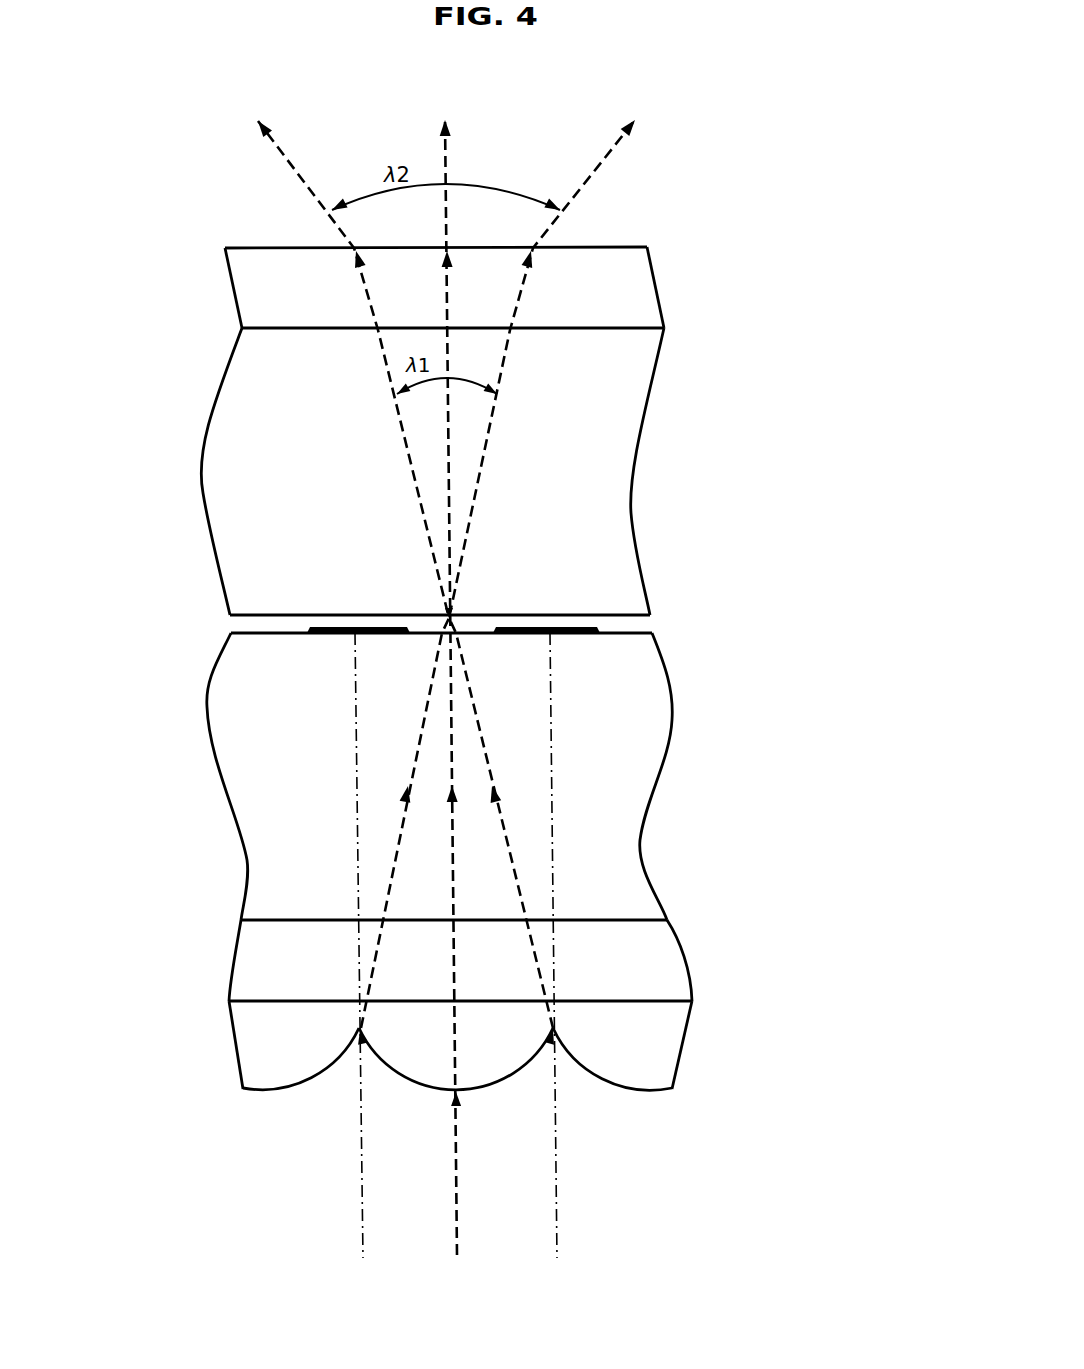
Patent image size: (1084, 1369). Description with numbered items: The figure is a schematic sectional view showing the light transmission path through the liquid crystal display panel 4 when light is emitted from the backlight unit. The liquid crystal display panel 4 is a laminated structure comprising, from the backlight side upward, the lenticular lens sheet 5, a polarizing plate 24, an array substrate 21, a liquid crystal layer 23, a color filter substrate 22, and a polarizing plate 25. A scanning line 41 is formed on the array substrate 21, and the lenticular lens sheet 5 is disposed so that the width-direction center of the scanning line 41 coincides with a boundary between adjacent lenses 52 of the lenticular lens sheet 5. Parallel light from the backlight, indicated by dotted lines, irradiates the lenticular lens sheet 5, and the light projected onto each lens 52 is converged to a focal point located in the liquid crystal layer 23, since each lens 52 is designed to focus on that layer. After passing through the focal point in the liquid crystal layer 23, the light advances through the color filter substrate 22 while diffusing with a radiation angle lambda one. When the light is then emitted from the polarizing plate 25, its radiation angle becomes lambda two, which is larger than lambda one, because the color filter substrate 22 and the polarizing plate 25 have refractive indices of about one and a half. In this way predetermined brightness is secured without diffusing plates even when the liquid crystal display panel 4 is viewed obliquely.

The liquid crystal display panel 4 is at (197, 298).
The polarizing plate 25 is at (664, 281).
The color filter substrate 22 is at (642, 452).
The liquid crystal layer 23 is at (641, 629).
The scanning line 41 is at (326, 628).
The array substrate 21 is at (663, 772).
The polarizing plate 24 is at (688, 956).
The lenticular lens sheet 5 is at (688, 1047).
The lens 52 is at (268, 1047).